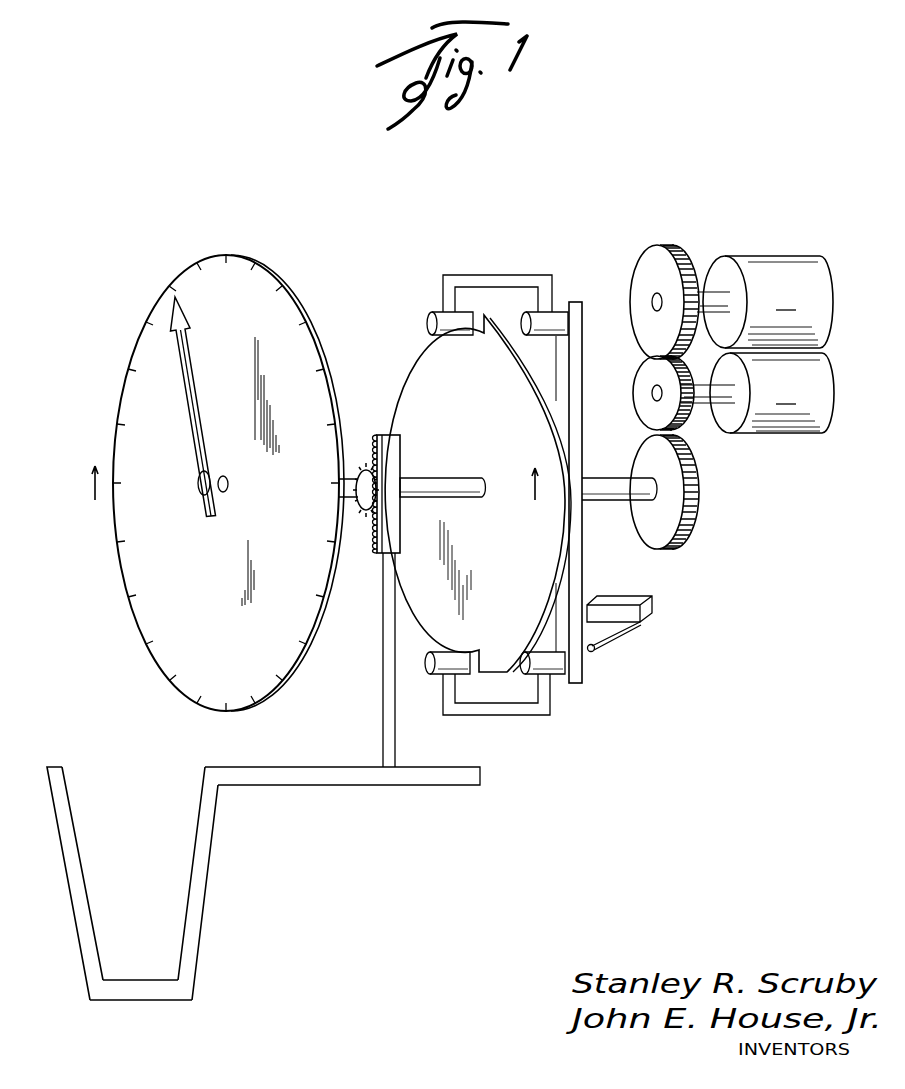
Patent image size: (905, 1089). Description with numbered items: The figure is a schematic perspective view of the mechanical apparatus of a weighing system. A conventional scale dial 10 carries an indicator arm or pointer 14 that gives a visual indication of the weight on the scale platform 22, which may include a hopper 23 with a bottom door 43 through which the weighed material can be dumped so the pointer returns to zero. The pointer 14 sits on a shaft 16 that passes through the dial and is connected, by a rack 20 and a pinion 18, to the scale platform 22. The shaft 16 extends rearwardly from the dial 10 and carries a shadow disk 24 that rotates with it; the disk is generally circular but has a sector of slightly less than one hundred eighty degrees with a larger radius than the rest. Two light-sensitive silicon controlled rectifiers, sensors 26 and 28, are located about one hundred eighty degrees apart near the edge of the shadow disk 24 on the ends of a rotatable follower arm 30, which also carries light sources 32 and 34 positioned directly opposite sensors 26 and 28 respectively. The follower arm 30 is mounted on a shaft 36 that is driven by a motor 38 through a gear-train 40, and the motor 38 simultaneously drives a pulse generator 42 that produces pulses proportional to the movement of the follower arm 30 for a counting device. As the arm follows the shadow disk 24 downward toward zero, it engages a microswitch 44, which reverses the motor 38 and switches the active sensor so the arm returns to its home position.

The scale dial 10 is at (128, 560).
The pointer 14 is at (190, 393).
The shaft 16 is at (441, 482).
The pinion 18 is at (364, 470).
The rack 20 is at (374, 548).
The scale platform 22 is at (313, 790).
The hopper 23 is at (205, 917).
The shadow disk 24 is at (440, 372).
The sensor 26 is at (427, 320).
The sensor 28 is at (427, 667).
The follower arm 30 is at (582, 582).
The light source 32 is at (523, 312).
The light source 34 is at (565, 665).
The shaft 36 is at (603, 478).
The motor 38 is at (733, 393).
The gear-train 40 is at (697, 493).
The pulse generator 42 is at (731, 302).
The bottom door 43 is at (138, 1002).
The microswitch 44 is at (652, 614).